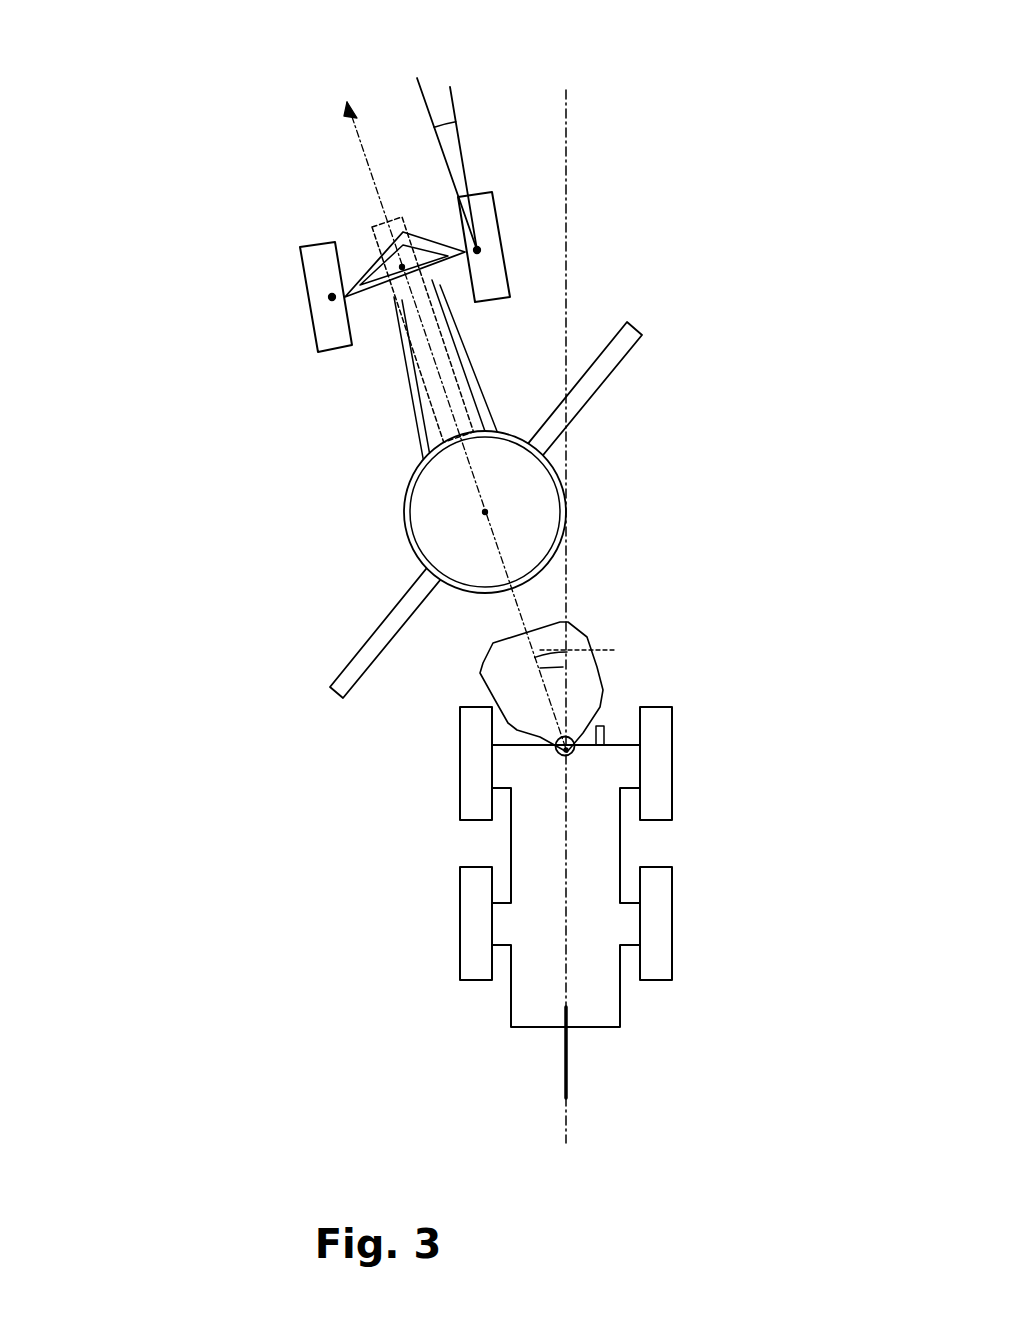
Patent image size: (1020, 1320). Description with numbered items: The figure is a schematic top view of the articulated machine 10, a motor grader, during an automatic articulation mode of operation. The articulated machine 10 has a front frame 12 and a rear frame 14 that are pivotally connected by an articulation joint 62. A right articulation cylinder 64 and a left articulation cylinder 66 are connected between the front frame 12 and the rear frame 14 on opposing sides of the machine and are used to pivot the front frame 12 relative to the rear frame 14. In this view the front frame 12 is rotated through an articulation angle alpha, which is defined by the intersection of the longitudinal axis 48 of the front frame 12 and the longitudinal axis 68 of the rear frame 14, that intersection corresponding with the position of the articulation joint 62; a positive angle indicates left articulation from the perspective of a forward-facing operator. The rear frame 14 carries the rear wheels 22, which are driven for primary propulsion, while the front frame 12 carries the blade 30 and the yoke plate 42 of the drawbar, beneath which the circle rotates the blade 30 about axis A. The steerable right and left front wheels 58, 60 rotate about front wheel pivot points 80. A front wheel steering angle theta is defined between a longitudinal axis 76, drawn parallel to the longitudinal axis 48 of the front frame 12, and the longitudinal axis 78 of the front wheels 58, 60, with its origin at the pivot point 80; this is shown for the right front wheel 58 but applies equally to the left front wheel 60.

The articulated machine 10 is at (108, 494).
The front frame 12 is at (455, 367).
The rear frame 14 is at (510, 995).
The rear wheels 22 is at (460, 790).
The blade 30 is at (330, 680).
The yoke plate 42 is at (405, 505).
The longitudinal axis of the front frame 48 is at (362, 152).
The right front wheel 58 is at (500, 228).
The left front wheel 60 is at (333, 352).
The articulation joint 62 is at (576, 758).
The right articulation cylinder 64 is at (604, 725).
The left articulation cylinder 66 is at (482, 678).
The longitudinal axis of the rear frame 68 is at (572, 100).
The longitudinal axis parallel to the front frame axis 76 is at (420, 88).
The longitudinal axis of the front wheels 78 is at (463, 150).
The front wheel pivot point 80 is at (480, 254).